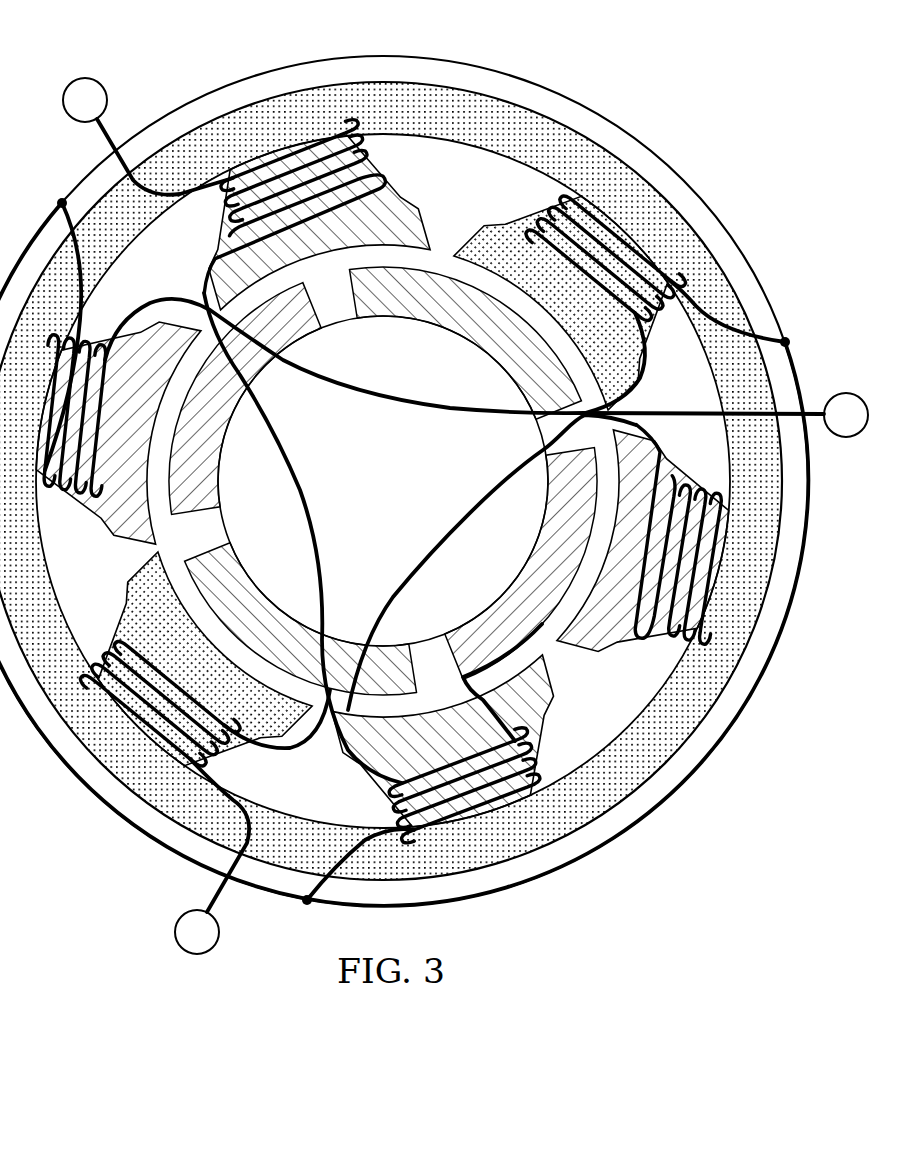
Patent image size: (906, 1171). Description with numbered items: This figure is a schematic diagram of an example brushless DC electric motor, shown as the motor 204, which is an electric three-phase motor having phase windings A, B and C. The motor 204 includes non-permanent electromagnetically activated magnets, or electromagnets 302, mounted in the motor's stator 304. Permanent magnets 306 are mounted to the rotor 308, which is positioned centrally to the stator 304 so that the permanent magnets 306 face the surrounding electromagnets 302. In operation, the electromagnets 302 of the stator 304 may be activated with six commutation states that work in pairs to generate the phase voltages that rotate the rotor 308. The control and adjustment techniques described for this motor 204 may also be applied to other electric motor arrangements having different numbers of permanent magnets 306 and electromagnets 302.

The motor 204 is at (696, 72).
The electromagnets 302 is at (396, 201).
The stator 304 is at (519, 108).
The permanent magnets 306 is at (413, 331).
The rotor 308 is at (398, 494).